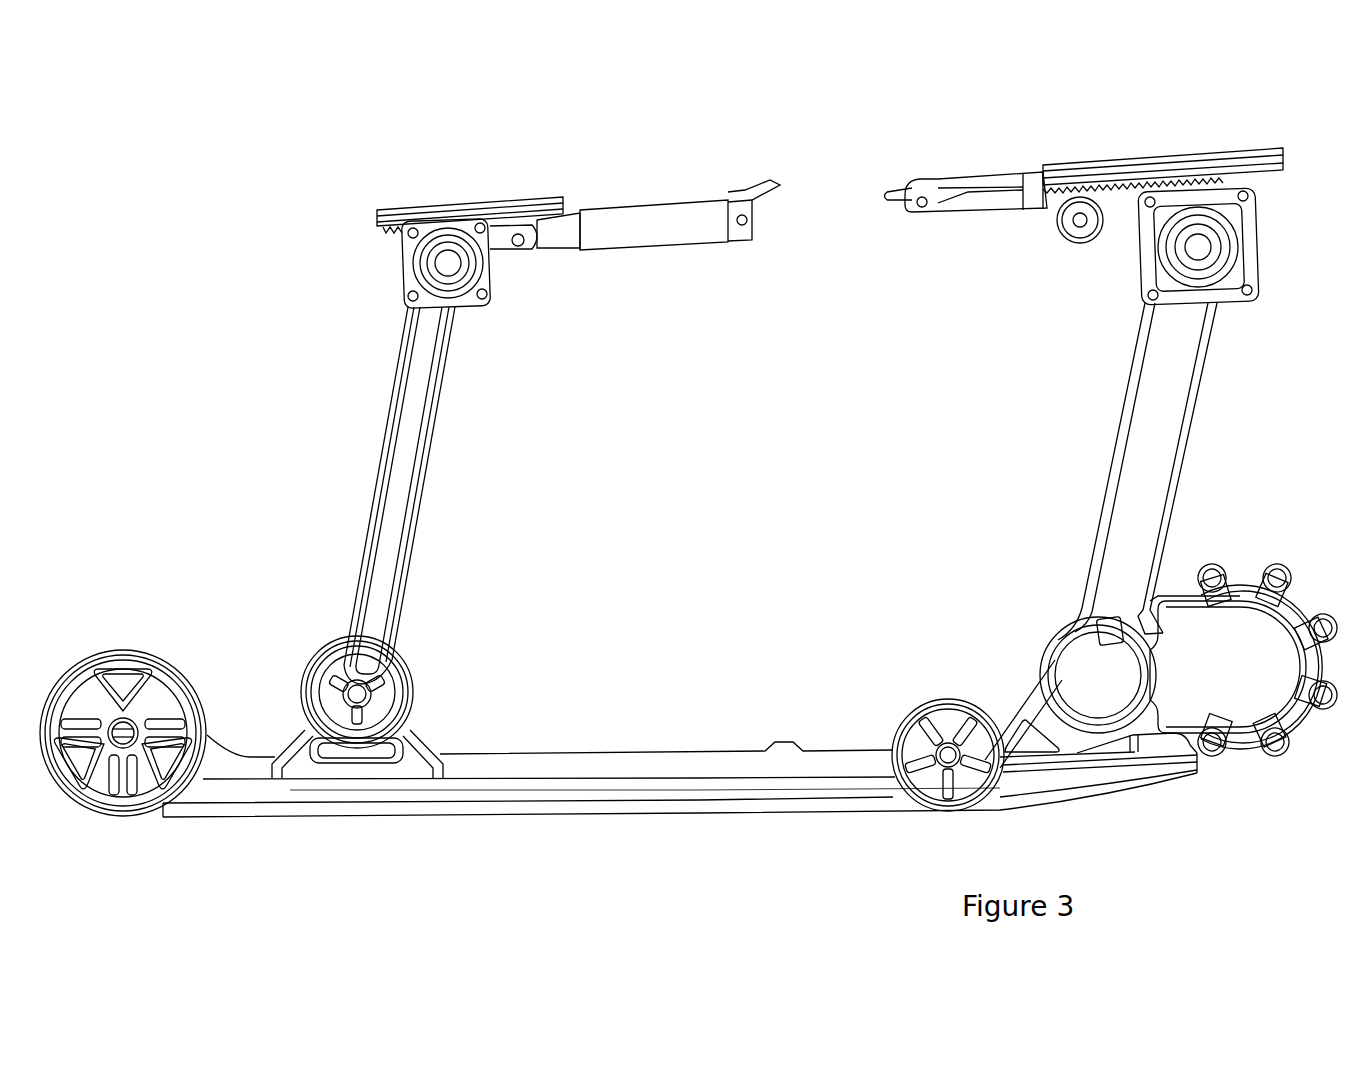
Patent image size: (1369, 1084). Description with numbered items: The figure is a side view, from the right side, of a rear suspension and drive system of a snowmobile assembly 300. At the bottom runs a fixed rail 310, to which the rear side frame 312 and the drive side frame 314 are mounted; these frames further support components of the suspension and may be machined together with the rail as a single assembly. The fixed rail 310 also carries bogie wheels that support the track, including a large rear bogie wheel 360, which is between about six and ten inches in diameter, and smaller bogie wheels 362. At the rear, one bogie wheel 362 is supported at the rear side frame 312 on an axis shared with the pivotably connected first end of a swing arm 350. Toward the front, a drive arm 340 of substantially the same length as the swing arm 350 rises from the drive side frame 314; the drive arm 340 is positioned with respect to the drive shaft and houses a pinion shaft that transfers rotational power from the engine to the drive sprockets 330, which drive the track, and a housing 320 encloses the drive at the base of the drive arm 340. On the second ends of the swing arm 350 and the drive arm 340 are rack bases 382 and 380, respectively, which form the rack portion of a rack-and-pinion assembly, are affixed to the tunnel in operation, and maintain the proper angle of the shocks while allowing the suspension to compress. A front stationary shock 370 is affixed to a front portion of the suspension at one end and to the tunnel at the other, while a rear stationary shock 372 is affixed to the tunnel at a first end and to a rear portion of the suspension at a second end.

The rear suspension system of a snowmobile assembly 300 is at (288, 85).
The fixed rail 310 is at (681, 790).
The rear side frame 312 is at (413, 746).
The drive side frame 314 is at (1025, 710).
The gear housing 320 is at (1232, 688).
The drive sprocket 330 is at (1278, 578).
The drive arm 340 is at (1158, 430).
The swing arm 350 is at (404, 478).
The rear bogie wheel 360 is at (123, 652).
The bogie wheel 362 is at (326, 645).
The front stationary shock 370 is at (985, 203).
The rear stationary shock 372 is at (648, 216).
The rack base 380 is at (1181, 181).
The rack base 382 is at (506, 216).